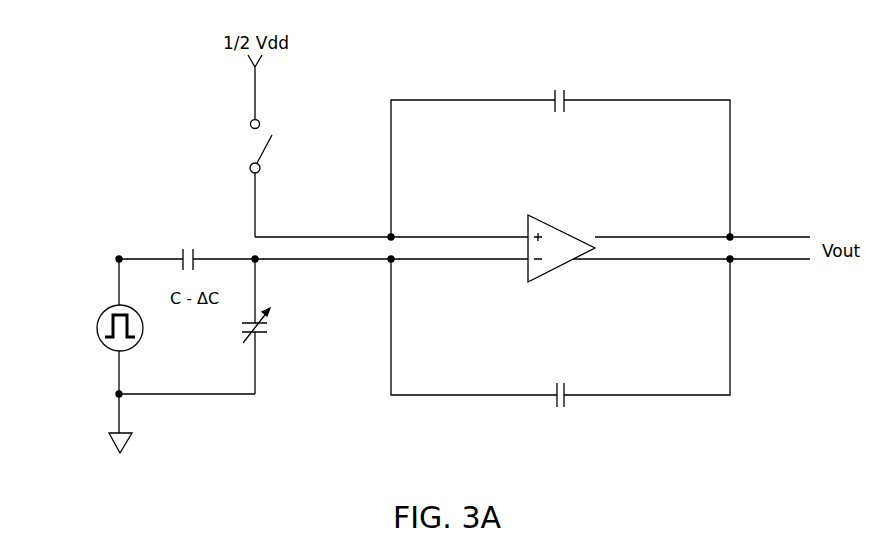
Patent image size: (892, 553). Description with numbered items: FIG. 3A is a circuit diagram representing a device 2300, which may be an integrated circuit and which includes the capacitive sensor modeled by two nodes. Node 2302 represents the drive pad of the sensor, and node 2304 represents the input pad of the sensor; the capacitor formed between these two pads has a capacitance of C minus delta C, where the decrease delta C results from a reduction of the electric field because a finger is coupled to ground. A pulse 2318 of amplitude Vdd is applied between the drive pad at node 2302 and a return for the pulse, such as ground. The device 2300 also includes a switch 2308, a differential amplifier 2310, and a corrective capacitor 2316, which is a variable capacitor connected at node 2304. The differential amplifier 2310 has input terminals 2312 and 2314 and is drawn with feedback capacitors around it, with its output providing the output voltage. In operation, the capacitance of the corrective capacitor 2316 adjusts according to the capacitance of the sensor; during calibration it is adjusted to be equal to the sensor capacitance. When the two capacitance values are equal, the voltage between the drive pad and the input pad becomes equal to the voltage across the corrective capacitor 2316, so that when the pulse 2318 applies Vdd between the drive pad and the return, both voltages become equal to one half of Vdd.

The device 2300 is at (669, 71).
The node 2302 is at (117, 256).
The node 2304 is at (250, 256).
The switch 2308 is at (263, 148).
The differential amplifier 2310 is at (587, 215).
The input terminal 2312 is at (432, 212).
The input terminal 2314 is at (397, 265).
The corrective capacitor 2316 is at (267, 330).
The pulse 2318 is at (97, 328).